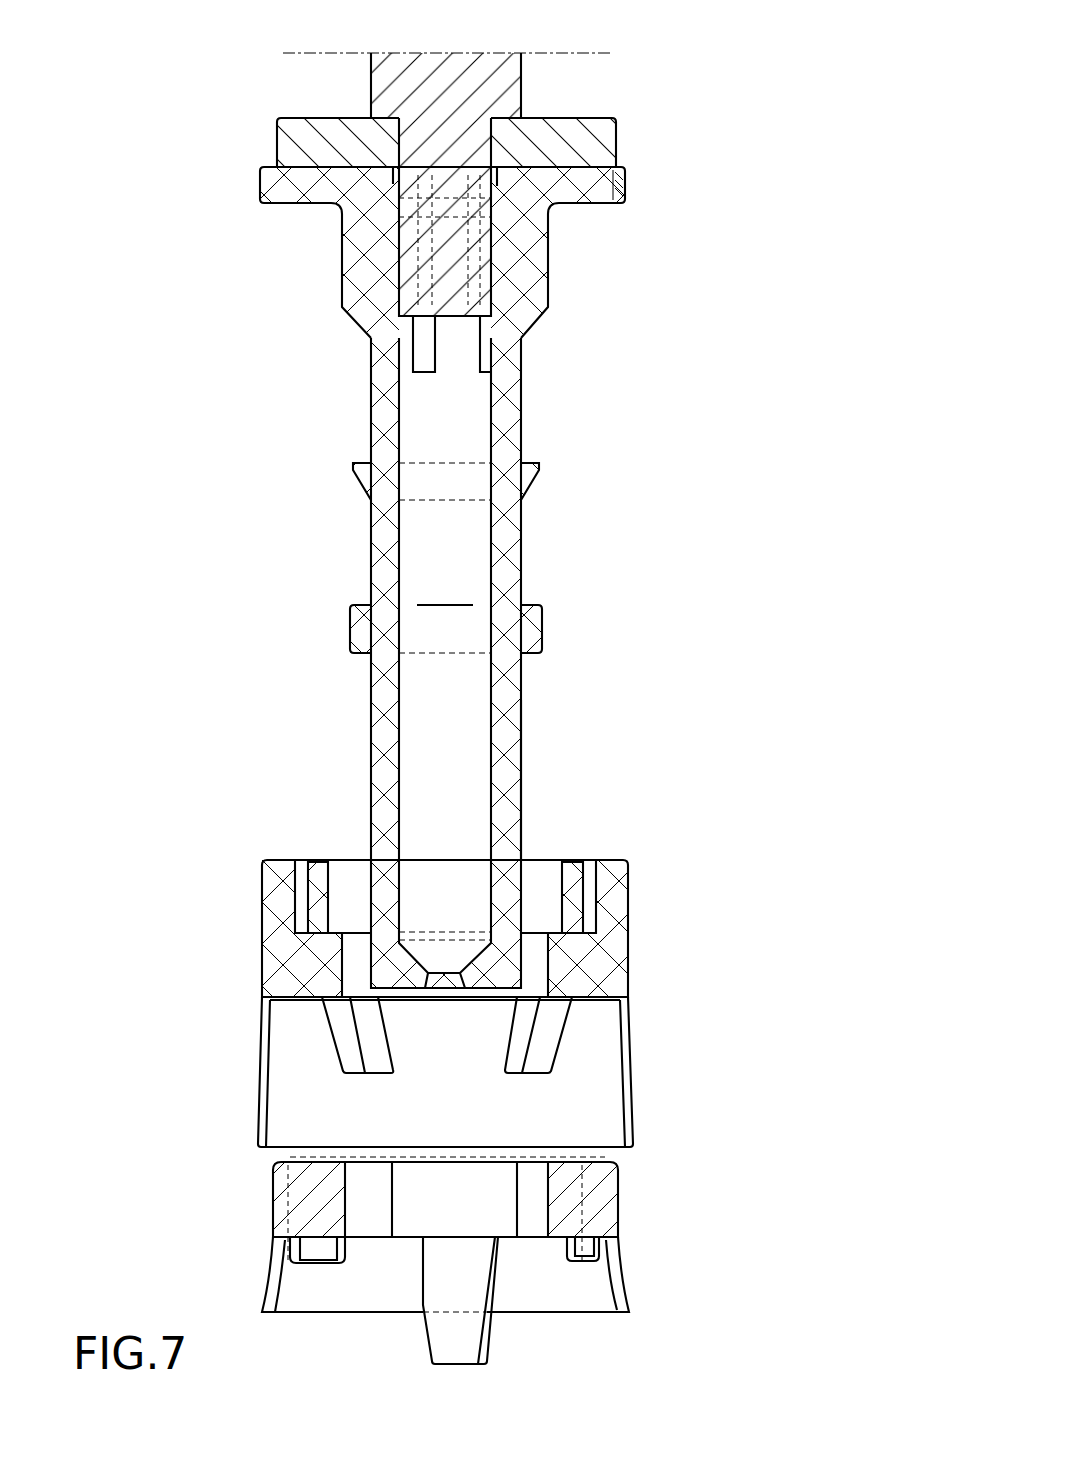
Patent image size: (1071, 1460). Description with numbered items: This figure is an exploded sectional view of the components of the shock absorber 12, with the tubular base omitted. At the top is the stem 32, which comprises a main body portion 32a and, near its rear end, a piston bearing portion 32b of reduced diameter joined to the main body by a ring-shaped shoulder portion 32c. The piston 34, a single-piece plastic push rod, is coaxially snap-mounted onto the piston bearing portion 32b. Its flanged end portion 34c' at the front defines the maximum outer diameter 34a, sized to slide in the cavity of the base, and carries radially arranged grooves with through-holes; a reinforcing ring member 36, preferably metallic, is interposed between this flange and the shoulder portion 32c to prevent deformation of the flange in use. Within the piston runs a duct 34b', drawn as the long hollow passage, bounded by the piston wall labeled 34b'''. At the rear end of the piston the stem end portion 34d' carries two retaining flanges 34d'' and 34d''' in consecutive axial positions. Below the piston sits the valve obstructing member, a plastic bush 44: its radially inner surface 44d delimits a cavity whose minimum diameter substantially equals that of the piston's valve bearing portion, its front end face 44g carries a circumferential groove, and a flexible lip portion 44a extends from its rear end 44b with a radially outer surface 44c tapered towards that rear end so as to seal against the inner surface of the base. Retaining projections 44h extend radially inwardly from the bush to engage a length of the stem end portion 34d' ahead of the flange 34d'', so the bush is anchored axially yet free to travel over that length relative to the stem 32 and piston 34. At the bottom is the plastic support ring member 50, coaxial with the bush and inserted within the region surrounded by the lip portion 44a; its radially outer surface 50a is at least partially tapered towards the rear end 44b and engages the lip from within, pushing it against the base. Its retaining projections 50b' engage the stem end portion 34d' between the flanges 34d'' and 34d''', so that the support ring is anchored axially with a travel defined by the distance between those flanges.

The fluid connector assembly 12 is at (820, 105).
The stem 32 is at (355, 87).
The main body portion 32a is at (497, 90).
The piston bearing portion 32b is at (455, 270).
The ring-shaped shoulder portion 32c is at (510, 120).
The piston 34 is at (262, 257).
The maximum outer diameter 34a is at (625, 185).
The duct 34b' is at (617, 663).
The tube wall 34b''' is at (284, 652).
The flanged end portion 34c' is at (341, 237).
The stem end portion 34d' is at (679, 780).
The retaining flange 34d'' is at (299, 467).
The retaining flange 34d''' is at (303, 615).
The reinforcing ring member 36 is at (287, 134).
The bush 44 is at (243, 888).
The flexible lip portion 44a is at (262, 1074).
The rear end 44b is at (265, 1006).
The radially outer surface 44c is at (632, 1138).
The radially inner surface 44d is at (348, 970).
The front end face 44g is at (608, 860).
The retaining projections 44h is at (543, 1042).
The support ring member 50 is at (245, 1240).
The radially outer surface 50a is at (623, 1280).
The retaining projections 50b' is at (630, 1300).